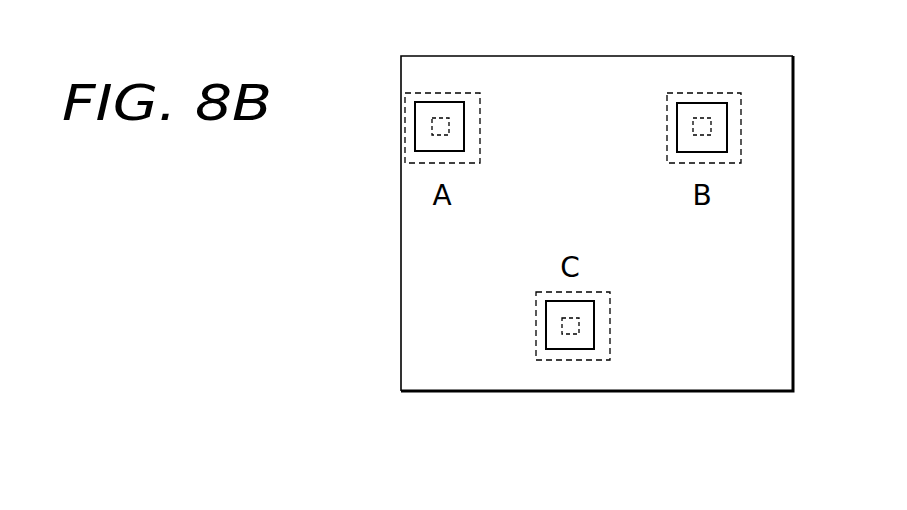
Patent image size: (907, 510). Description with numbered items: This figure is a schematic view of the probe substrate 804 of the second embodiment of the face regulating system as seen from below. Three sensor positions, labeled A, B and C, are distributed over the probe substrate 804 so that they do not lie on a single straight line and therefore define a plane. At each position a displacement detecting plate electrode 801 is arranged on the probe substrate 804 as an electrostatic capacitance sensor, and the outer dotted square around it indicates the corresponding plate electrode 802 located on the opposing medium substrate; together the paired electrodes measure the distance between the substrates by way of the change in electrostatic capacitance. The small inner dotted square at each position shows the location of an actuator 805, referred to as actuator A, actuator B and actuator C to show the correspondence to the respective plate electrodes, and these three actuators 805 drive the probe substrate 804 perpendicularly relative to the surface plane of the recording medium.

The displacement detecting plate electrode 801 is at (727, 121).
The displacement detecting plate electrode 802 is at (741, 147).
The probe substrate 804 is at (404, 215).
The actuator 805 is at (698, 135).